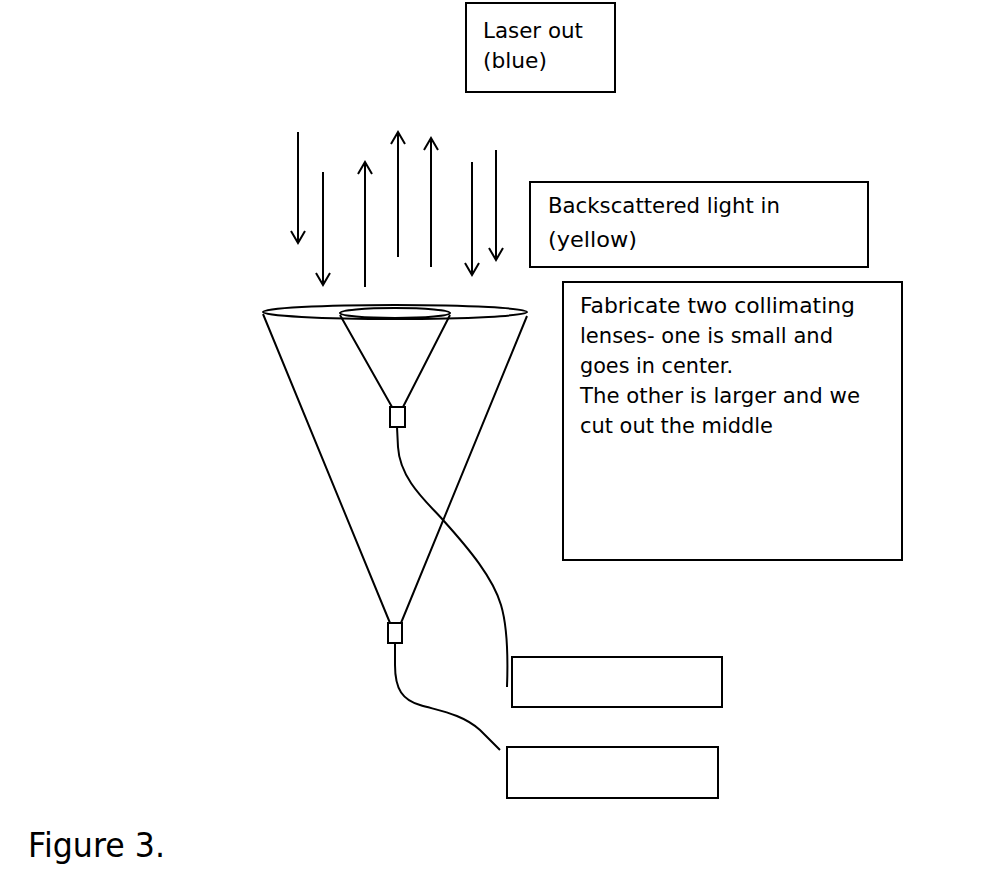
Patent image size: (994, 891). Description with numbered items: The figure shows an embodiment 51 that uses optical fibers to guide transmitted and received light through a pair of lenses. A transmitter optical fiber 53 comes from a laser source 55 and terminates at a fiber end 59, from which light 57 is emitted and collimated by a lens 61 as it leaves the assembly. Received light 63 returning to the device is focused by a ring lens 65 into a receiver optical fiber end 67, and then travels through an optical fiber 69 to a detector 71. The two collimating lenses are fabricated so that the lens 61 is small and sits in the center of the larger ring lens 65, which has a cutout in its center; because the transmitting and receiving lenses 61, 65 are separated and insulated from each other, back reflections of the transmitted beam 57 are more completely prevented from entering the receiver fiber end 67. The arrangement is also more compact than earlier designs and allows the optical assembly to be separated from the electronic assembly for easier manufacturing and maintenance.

The embodiment 51 is at (172, 685).
The transmitter optical fiber 53 is at (500, 613).
The laser source 55 is at (725, 682).
The light 57 is at (433, 170).
The fiber end 59 is at (406, 423).
The lens 61 is at (381, 317).
The received light 63 is at (298, 175).
The ring lens 65 is at (290, 318).
The receiver optical fiber end 67 is at (387, 635).
The optical fiber 69 is at (432, 710).
The detector 71 is at (628, 798).